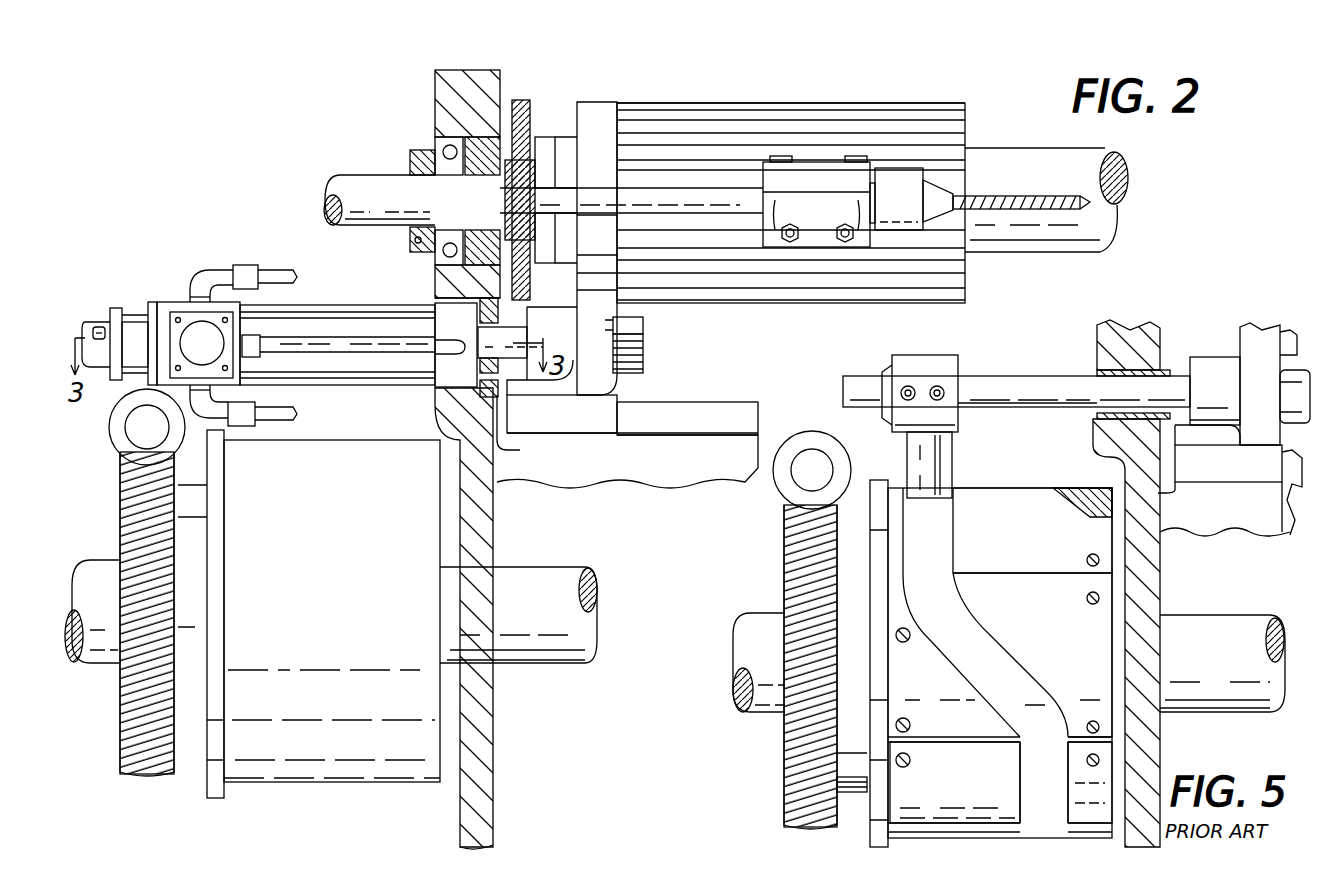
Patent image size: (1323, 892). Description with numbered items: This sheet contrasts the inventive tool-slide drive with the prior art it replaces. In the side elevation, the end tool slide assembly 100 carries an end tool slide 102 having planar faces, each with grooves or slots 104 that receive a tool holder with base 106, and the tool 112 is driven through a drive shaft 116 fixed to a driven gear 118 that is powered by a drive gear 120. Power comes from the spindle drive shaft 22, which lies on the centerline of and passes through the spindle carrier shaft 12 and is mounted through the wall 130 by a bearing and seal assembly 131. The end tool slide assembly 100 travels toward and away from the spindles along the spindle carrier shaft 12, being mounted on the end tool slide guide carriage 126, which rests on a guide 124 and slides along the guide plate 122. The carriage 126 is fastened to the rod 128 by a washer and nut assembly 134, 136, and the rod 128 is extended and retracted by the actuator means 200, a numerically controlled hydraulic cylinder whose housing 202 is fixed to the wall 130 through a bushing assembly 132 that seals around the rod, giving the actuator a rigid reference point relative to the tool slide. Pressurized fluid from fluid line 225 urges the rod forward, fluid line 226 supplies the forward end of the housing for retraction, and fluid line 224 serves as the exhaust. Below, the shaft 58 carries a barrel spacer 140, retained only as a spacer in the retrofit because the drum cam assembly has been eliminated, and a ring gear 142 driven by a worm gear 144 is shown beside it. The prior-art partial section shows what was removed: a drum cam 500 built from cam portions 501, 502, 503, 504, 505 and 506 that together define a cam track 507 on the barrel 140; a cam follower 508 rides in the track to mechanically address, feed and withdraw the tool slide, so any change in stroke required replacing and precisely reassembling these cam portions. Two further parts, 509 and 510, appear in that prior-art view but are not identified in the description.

In FIG. 2, the spindle carrier shaft 12 is at (1088, 160).
In FIG. 2, the drive shaft 22 is at (358, 180).
In FIG. 2, the shaft 58 is at (572, 665).
In FIG. 5, the shaft 58 is at (1212, 661).
In FIG. 2, the end tool slide assembly 100 is at (759, 98).
In FIG. 5, the end tool slide assembly 100 is at (1275, 313).
In FIG. 2, the end tool slide 102 is at (860, 101).
In FIG. 2, the grooves or slots 104 is at (905, 184).
In FIG. 2, the tool holder with base 106 is at (838, 205).
In FIG. 2, the tool 112 is at (1085, 214).
In FIG. 2, the drive shaft 116 is at (745, 207).
In FIG. 2, the driven gear 118 is at (512, 196).
In FIG. 2, the drive gear 120 is at (532, 102).
In FIG. 2, the guide plate 122 is at (742, 408).
In FIG. 5, the guide plate 122 is at (1278, 500).
In FIG. 2, the guide 124 is at (604, 420).
In FIG. 5, the guide 124 is at (1240, 470).
In FIG. 2, the end tool slide guide carriage 126 is at (605, 118).
In FIG. 5, the end tool slide guide carriage 126 is at (1252, 375).
In FIG. 2, the rod 128 is at (510, 368).
In FIG. 2, the wall 130 is at (440, 86).
In FIG. 5, the wall 130 is at (1145, 588).
In FIG. 2, the bearing and seal assembly 131 is at (412, 150).
In FIG. 2, the bushing assembly 132 is at (497, 295).
In FIG. 2, the washer 134 is at (630, 358).
In FIG. 2, the nut 136 is at (628, 328).
In FIG. 2, the barrel spacer 140 is at (360, 622).
In FIG. 5, the barrel spacer 140 is at (1040, 765).
In FIG. 2, the ring gear 142 is at (175, 524).
In FIG. 5, the ring gear 142 is at (790, 550).
In FIG. 2, the worm gear 144 is at (180, 440).
In FIG. 5, the worm gear 144 is at (824, 460).
In FIG. 2, the actuator means 200 is at (319, 234).
In FIG. 2, the housing 202 is at (368, 362).
In FIG. 2, the fluid line 224 is at (285, 416).
In FIG. 2, the fluid line 225 is at (214, 272).
In FIG. 2, the fluid line 226 is at (345, 296).
In FIG. 5, the drum cam 500 is at (819, 842).
In FIG. 5, the cam portion 501 is at (972, 797).
In FIG. 5, the cam portion 502 is at (985, 668).
In FIG. 5, the cam portion 503 is at (897, 520).
In FIG. 5, the cam portion 504 is at (1100, 778).
In FIG. 5, the cam portion 505 is at (1063, 614).
In FIG. 5, the cam portion 506 is at (1055, 527).
In FIG. 5, the cam track 507 is at (1007, 665).
In FIG. 5, the cam follower 508 is at (935, 458).
In FIG. 5, the block 509 is at (948, 362).
In FIG. 5, the shaft 510 is at (1060, 380).